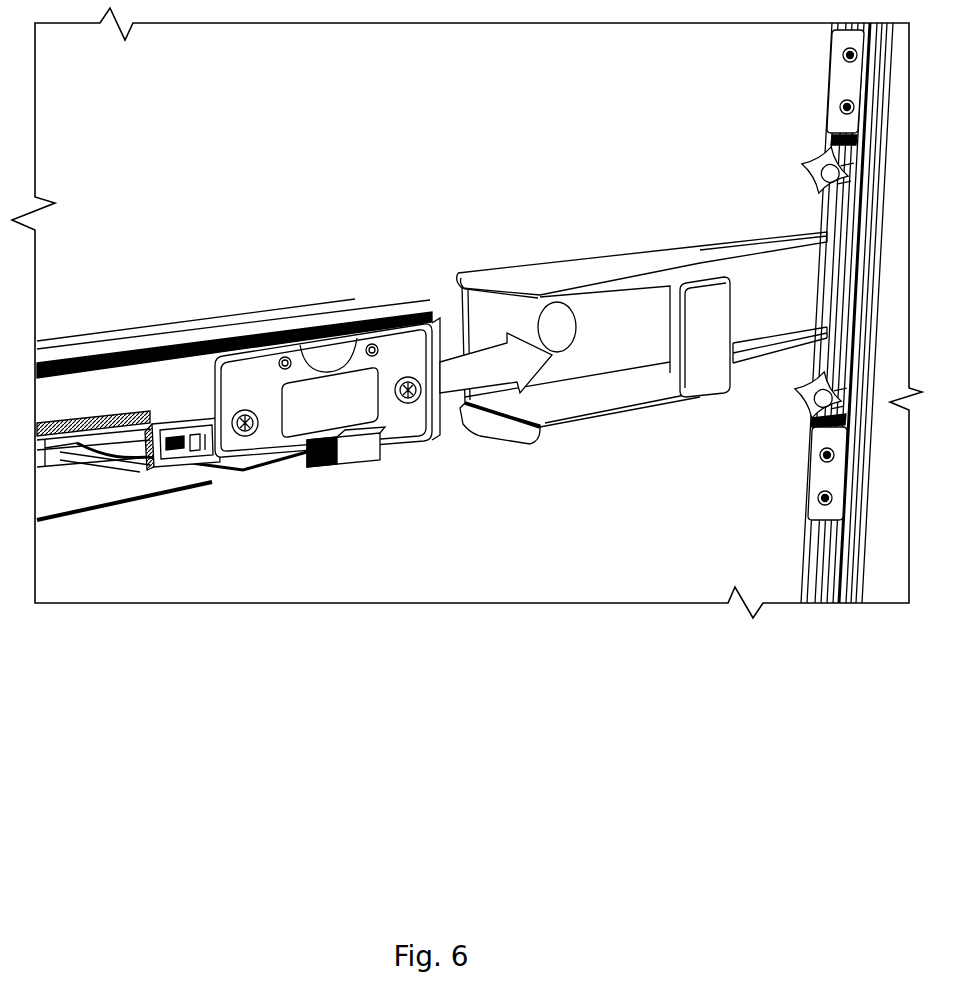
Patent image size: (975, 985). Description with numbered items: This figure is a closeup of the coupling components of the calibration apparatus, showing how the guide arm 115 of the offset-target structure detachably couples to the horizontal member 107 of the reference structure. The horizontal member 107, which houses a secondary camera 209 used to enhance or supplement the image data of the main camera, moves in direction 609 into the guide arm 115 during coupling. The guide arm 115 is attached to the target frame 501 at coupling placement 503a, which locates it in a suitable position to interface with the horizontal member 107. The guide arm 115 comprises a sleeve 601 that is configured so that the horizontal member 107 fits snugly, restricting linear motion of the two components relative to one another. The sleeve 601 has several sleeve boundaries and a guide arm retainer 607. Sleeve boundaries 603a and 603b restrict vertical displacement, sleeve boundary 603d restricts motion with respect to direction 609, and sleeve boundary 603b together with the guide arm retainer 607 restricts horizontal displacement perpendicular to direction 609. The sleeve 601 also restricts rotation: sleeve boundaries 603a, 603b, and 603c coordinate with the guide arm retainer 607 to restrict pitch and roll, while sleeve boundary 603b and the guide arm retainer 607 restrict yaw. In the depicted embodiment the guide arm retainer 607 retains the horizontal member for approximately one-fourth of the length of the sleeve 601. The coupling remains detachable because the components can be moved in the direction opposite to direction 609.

The horizontal member 107 is at (127, 333).
The guide arm 115 is at (650, 204).
The secondary camera 209 is at (327, 392).
The target frame 501 is at (805, 565).
The coupling placement 503a is at (770, 209).
The sleeve 601 is at (476, 447).
The sleeve boundary 603a is at (537, 277).
The sleeve boundary 603b is at (566, 344).
The sleeve boundary 603c is at (582, 407).
The sleeve boundary 603d is at (670, 330).
The guide arm retainer 607 is at (705, 337).
The direction 609 is at (496, 363).